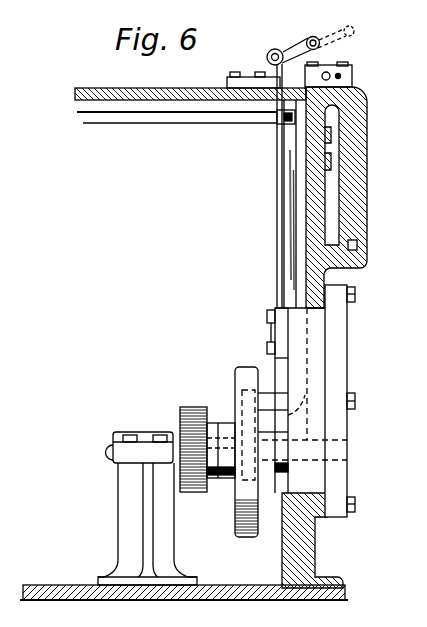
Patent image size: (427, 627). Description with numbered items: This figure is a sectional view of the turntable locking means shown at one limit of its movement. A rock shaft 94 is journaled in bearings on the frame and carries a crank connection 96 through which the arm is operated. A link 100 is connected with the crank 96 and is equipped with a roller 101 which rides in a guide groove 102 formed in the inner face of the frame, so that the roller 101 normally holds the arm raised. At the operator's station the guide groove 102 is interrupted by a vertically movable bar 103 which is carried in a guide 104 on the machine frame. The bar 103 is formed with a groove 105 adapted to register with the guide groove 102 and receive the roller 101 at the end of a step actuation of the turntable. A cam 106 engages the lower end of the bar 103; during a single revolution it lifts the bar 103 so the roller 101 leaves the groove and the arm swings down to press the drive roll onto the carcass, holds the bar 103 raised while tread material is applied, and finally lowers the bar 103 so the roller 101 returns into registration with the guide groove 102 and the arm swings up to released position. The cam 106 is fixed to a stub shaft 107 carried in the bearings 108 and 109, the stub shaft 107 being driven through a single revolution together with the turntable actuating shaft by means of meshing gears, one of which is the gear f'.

The rock shaft 94 is at (307, 39).
The crank connection 96 is at (352, 38).
The link 100 is at (268, 67).
The roller 101 is at (278, 120).
The guide groove 102 is at (177, 116).
The vertically movable bar 103 is at (296, 232).
The guide 104 is at (300, 321).
The groove 105 is at (286, 143).
The cam 106 is at (243, 368).
The stub shaft 107 is at (355, 443).
The bearing 108 is at (109, 468).
The bearing 109 is at (337, 468).
The gear f' is at (207, 433).